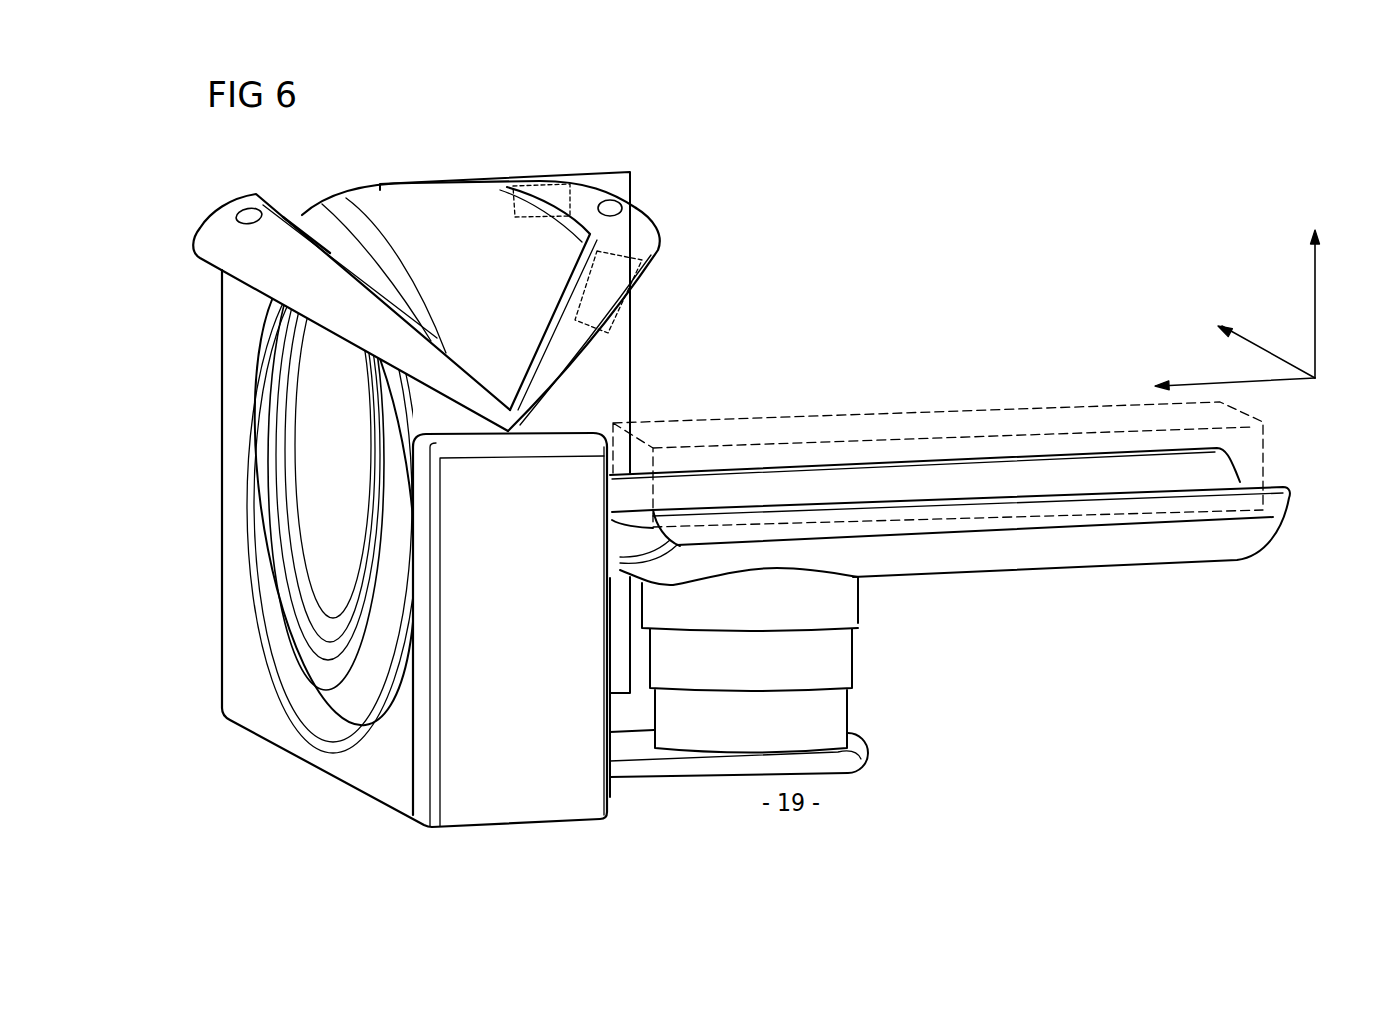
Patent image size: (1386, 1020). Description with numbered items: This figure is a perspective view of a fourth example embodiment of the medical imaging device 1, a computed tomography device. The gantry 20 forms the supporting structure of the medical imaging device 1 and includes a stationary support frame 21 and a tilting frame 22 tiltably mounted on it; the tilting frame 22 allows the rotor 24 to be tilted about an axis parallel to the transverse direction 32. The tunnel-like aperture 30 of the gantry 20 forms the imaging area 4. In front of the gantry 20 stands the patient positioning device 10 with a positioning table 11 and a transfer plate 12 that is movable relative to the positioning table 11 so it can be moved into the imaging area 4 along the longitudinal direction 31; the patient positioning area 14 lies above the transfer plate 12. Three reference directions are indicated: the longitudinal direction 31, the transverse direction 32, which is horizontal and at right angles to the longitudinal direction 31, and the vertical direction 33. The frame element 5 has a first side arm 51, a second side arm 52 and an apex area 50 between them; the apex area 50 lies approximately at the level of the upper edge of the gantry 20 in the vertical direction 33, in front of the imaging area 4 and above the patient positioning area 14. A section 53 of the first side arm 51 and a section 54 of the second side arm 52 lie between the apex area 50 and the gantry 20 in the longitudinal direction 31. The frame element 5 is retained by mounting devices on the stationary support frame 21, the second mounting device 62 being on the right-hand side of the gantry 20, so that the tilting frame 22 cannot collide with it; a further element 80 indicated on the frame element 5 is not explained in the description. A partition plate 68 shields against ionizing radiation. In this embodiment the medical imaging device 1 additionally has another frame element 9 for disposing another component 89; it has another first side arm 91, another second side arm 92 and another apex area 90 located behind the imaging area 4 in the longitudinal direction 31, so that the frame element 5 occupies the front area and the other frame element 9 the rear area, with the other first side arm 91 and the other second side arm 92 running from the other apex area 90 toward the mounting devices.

The medical imaging device 1 is at (737, 466).
The imaging area 4 is at (290, 493).
The frame element 5 is at (625, 268).
The other frame element 9 is at (315, 285).
The patient positioning device 10 is at (950, 557).
The positioning table 11 is at (833, 655).
The transfer plate 12 is at (1030, 480).
The patient positioning area 14 is at (910, 427).
The gantry 20 is at (435, 466).
The stationary support frame 21 is at (238, 663).
The tilting frame 22 is at (469, 229).
The rotor 24 is at (433, 200).
The tunnel-like aperture 30 is at (318, 520).
The longitudinal direction 31 is at (1200, 383).
The transverse direction 32 is at (1250, 340).
The vertical direction 33 is at (1318, 268).
The apex area 50 is at (625, 268).
The first side arm 51 is at (585, 197).
The second side arm 52 is at (590, 347).
The section of the first side arm 53 is at (540, 190).
The section of the second side arm 54 is at (630, 268).
The second mounting device 62 is at (515, 433).
The partition plate 68 is at (612, 390).
The bearing hole 80 is at (612, 205).
The other component 89 is at (247, 210).
The other apex area 90 is at (315, 285).
The other first side arm 91 is at (297, 213).
The other second side arm 92 is at (395, 347).